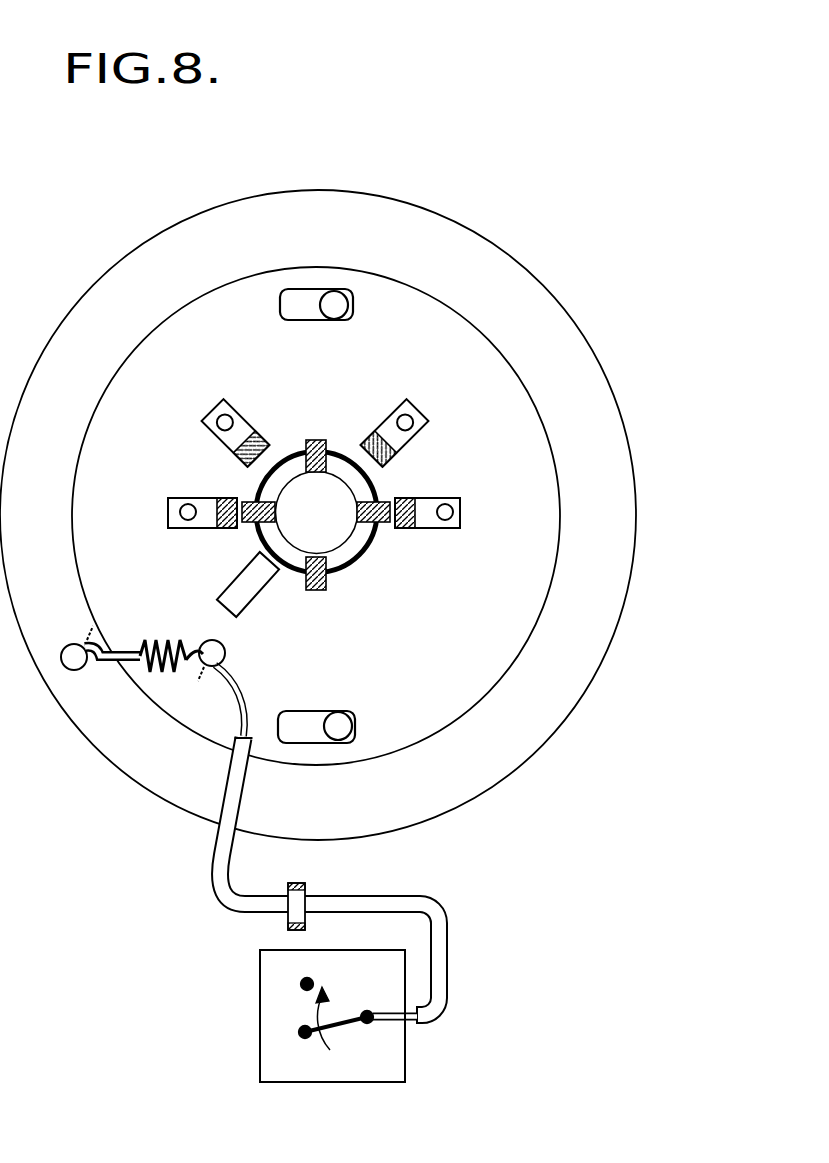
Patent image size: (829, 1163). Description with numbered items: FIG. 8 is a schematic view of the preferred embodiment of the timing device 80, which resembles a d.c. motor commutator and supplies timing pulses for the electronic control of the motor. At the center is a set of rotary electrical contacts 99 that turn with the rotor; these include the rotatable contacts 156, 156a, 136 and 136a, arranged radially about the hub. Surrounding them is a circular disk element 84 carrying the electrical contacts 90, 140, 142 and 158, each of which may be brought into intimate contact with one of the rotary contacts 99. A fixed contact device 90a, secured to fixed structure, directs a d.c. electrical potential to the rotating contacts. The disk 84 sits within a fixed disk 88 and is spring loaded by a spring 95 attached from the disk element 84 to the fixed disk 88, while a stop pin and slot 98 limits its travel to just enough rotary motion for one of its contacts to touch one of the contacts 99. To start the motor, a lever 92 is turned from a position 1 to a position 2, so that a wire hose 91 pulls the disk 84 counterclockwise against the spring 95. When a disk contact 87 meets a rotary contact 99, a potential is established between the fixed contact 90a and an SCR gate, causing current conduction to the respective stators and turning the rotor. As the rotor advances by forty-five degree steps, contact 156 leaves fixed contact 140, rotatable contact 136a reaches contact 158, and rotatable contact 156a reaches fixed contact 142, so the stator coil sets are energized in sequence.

The timing device 80 is at (293, 145).
The fixed disk 88 is at (500, 249).
The circular disk element 84 is at (492, 345).
The stop pin and slot 98 is at (318, 287).
The rotary electrical contacts 99 is at (357, 515).
The rotatable contact 156a is at (313, 438).
The rotatable contact 136a is at (317, 592).
The rotatable contact 156 is at (214, 548).
The rotatable contact 136 is at (370, 527).
The fixed contact 140 is at (215, 407).
The electrical contact 90 is at (419, 411).
The fixed contact device 90a is at (217, 602).
The disk contact 87 is at (214, 500).
The fixed contact 158 is at (168, 508).
The fixed contact 142 is at (461, 513).
The wire hose 91 is at (448, 925).
The spring 95 is at (142, 668).
The lever 92 is at (338, 1023).
The position 2 is at (297, 980).
The position 1 is at (297, 1034).